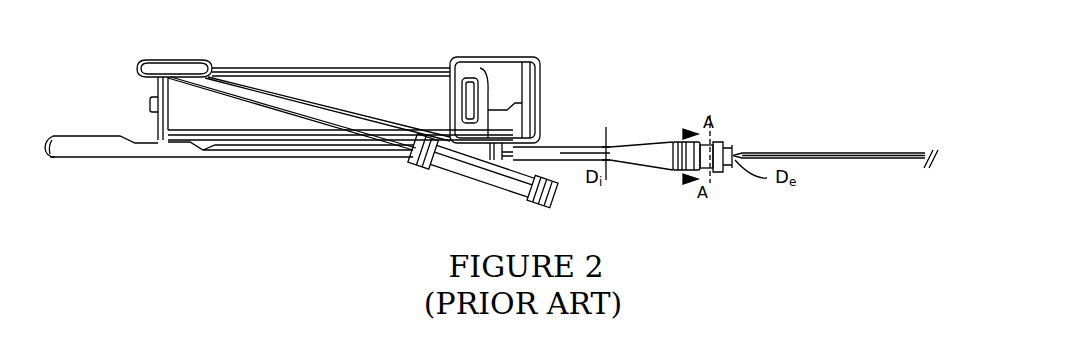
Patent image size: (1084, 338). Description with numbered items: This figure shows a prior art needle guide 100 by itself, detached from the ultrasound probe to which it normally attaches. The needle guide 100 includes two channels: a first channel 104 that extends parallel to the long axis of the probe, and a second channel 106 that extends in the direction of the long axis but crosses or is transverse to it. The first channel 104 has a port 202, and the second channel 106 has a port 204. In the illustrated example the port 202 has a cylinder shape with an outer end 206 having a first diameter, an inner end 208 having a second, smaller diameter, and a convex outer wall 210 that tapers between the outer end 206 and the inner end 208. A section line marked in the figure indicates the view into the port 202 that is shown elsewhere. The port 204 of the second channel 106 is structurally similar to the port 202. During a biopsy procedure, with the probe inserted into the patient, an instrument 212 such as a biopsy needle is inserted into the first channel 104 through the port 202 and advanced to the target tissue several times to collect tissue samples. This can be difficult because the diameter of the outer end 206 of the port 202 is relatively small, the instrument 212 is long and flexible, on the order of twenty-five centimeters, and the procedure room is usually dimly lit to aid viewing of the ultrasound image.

The needle guide 100 is at (276, 66).
The first channel 104 is at (252, 155).
The second channel 106 is at (368, 151).
The port 202 is at (627, 162).
The port 204 is at (493, 188).
The outer end 206 is at (687, 142).
The inner end 208 is at (600, 147).
The convex outer wall 210 is at (623, 143).
The instrument 212 is at (840, 153).